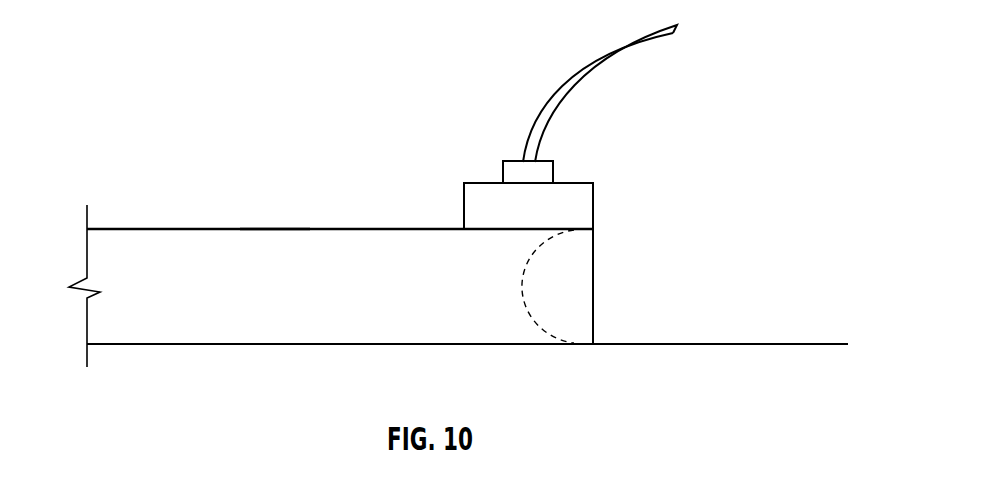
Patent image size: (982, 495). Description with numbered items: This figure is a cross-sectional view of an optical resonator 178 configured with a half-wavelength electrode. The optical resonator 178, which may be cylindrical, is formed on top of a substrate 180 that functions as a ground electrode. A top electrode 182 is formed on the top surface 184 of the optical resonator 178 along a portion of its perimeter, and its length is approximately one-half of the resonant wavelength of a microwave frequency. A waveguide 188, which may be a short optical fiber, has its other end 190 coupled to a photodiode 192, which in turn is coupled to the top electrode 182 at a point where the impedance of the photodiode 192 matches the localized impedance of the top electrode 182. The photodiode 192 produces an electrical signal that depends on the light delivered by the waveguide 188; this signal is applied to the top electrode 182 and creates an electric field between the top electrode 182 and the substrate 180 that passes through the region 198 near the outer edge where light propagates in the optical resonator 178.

The optical resonator 178 is at (160, 228).
The substrate 180 is at (779, 347).
The top electrode 182 is at (578, 208).
The top surface 184 is at (275, 213).
The waveguide 188 is at (628, 49).
The other end of the waveguide 190 is at (555, 100).
The photodiode 192 is at (543, 175).
The region 198 is at (575, 288).